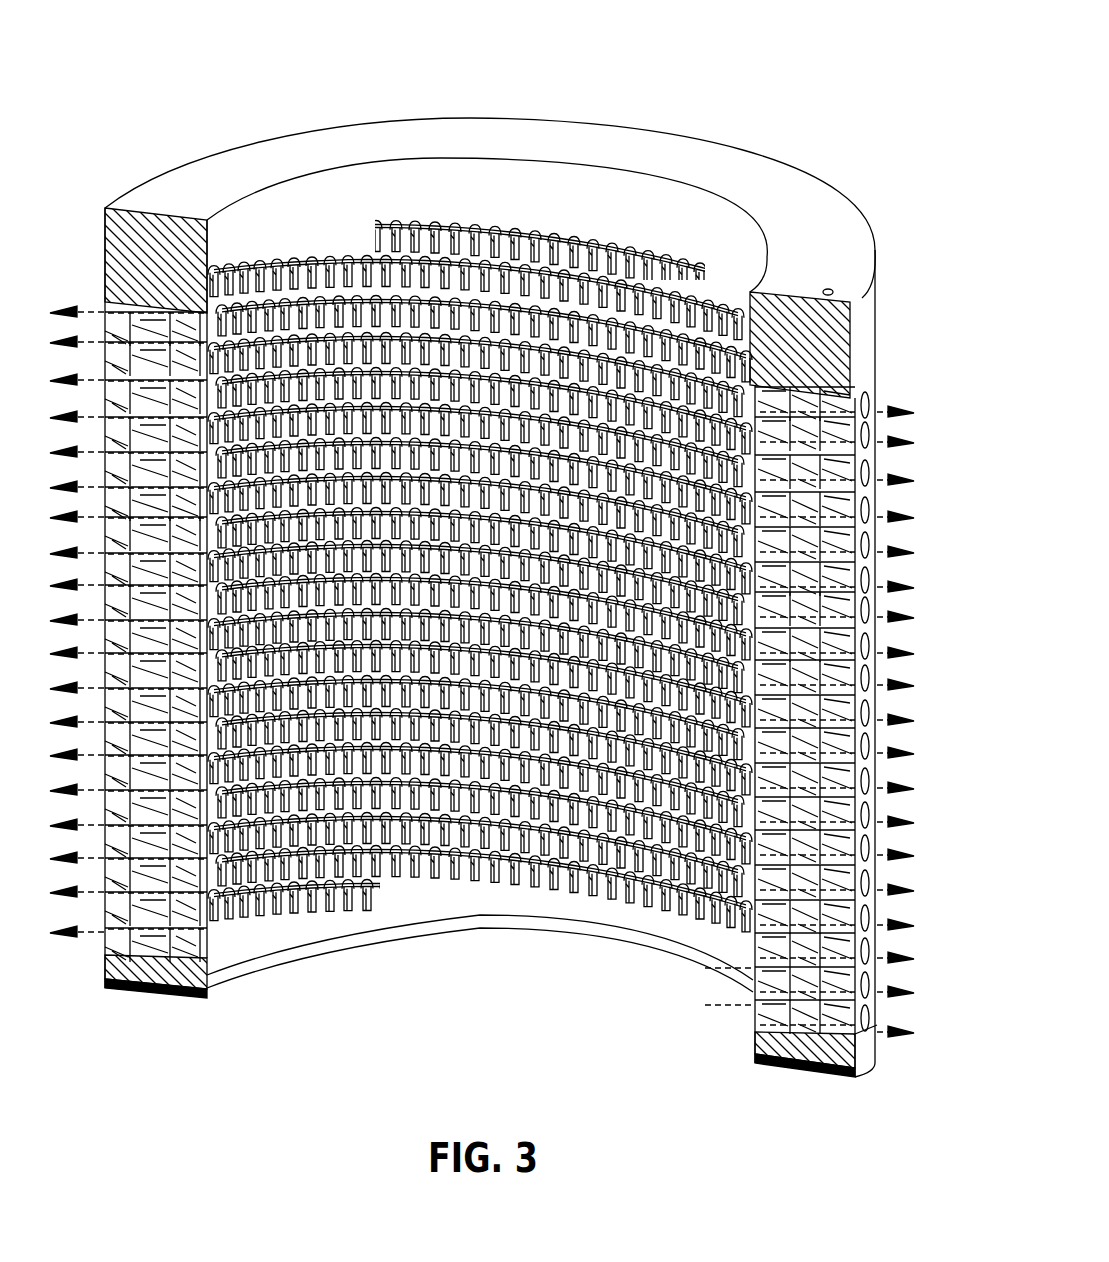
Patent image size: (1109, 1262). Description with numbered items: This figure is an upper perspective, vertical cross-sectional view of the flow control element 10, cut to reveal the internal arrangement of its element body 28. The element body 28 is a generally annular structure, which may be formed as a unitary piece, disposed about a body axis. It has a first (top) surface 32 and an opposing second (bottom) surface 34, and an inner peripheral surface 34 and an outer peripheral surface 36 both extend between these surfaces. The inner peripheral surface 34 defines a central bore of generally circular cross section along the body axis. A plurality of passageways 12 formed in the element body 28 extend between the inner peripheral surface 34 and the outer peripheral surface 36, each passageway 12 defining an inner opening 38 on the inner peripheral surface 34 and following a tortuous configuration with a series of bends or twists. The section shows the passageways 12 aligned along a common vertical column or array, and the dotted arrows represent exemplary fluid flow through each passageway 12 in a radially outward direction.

The flow control element 10 is at (742, 68).
The passageways 12 is at (369, 889).
The element body 28 is at (855, 202).
The first (top) surface 32 is at (233, 158).
The inner peripheral surface 34 is at (310, 192).
The outer peripheral surface 36 is at (859, 315).
The inner opening 38 is at (586, 232).